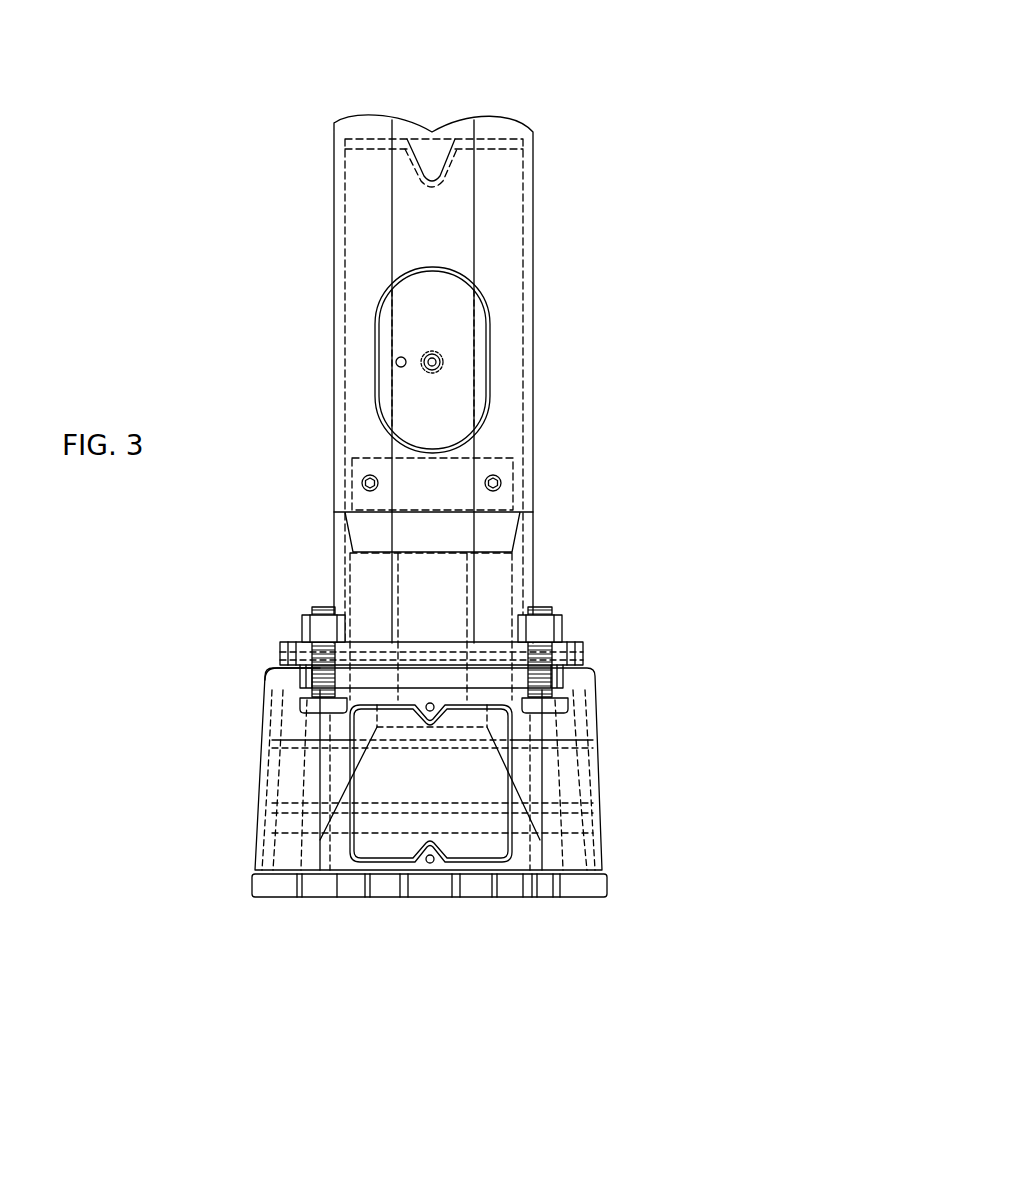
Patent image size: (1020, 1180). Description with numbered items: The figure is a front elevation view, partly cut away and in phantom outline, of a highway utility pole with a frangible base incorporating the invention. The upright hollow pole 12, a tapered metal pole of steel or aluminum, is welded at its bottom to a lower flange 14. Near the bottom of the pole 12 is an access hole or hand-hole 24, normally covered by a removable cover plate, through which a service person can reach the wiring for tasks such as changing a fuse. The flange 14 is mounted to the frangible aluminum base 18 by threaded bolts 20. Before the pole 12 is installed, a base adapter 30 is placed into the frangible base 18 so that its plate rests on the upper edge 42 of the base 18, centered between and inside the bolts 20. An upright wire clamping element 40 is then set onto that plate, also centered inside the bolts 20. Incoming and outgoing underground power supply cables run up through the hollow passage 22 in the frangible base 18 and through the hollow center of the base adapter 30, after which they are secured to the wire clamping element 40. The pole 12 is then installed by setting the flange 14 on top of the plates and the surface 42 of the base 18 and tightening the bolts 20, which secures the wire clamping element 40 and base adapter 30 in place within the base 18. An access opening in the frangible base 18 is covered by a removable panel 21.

The upright hollow pole 12 is at (510, 118).
The wire clamping element 40 is at (505, 248).
The hand-hole 24 is at (483, 377).
The threaded bolts 20 is at (562, 626).
The lower flange 14 is at (592, 655).
The upper edge 42 is at (272, 667).
The frangible base 18 is at (600, 765).
The removable panel 21 is at (357, 769).
The base adapter 30 is at (520, 826).
The hollow passage 22 is at (523, 908).